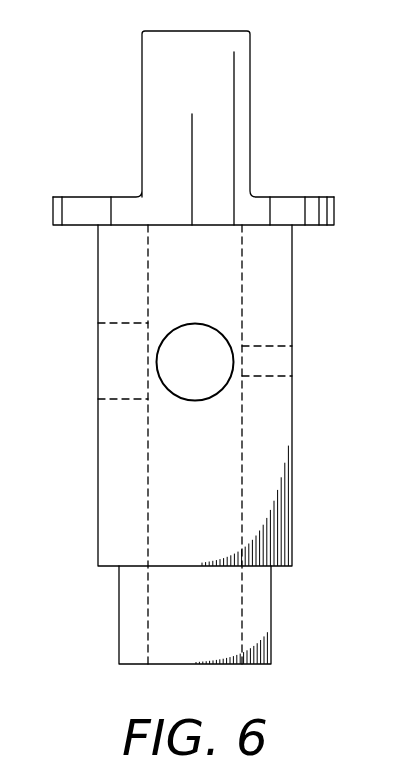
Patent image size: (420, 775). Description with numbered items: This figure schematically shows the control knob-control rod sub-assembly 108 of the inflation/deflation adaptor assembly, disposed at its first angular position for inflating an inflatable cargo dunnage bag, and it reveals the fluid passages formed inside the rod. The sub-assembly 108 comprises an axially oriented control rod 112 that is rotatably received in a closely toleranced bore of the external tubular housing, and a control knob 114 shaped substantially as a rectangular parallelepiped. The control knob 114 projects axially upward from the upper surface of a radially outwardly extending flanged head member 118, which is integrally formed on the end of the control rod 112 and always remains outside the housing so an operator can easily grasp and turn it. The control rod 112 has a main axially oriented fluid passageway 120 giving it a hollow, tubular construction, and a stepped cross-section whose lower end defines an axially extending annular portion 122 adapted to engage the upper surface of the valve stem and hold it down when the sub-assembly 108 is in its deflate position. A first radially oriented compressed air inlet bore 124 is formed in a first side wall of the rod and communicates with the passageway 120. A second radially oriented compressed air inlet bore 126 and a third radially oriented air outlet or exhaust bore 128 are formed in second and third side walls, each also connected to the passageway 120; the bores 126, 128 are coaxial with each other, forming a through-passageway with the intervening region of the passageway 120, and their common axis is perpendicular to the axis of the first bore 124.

The control knob-control rod sub-assembly 108 is at (126, 196).
The control rod 112 is at (263, 490).
The control knob 114 is at (225, 92).
The flanged head member 118 is at (320, 212).
The main axially oriented fluid passageway 120 is at (165, 472).
The axially extending annular portion 122 is at (255, 622).
The first radially oriented compressed air inlet bore 124 is at (190, 362).
The second radially oriented compressed air inlet bore 126 is at (292, 361).
The third radially oriented air outlet or exhaust bore 128 is at (98, 357).